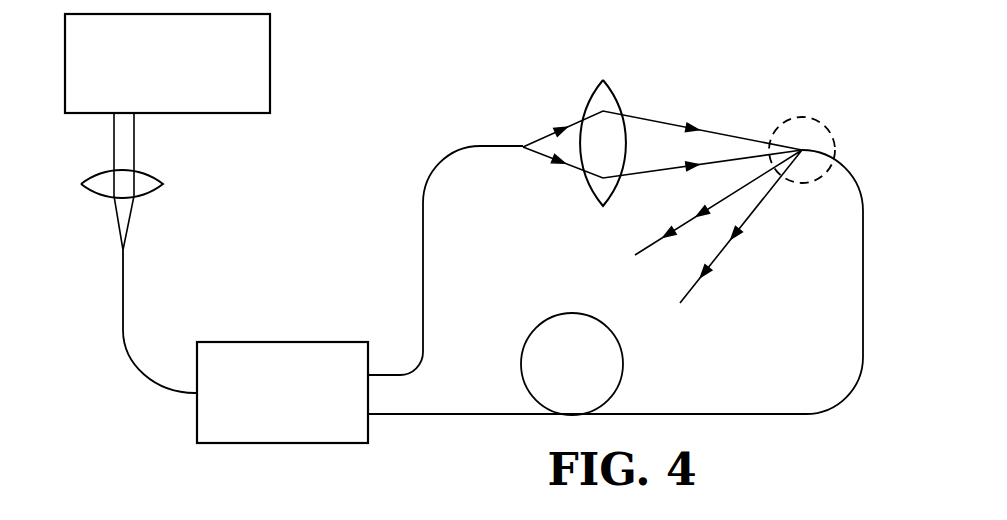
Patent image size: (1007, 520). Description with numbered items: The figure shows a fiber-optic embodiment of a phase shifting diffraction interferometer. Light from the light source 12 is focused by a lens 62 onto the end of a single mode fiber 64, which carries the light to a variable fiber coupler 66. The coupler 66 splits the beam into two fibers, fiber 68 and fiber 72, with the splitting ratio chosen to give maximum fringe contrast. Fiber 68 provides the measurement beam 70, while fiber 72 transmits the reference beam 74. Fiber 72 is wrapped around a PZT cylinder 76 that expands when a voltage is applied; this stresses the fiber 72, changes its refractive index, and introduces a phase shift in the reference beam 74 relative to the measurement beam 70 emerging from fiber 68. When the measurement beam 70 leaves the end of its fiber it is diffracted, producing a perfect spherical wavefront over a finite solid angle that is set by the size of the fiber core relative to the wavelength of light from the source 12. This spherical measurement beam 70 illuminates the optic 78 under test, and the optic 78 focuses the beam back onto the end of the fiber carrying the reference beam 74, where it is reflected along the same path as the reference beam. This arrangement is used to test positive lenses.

The light source 12 is at (270, 80).
The lens 62 is at (150, 175).
The single mode fiber 64 is at (123, 287).
The variable fiber coupler 66 is at (277, 342).
The fiber 68 is at (423, 228).
The measurement beam 70 is at (556, 133).
The fiber 72 is at (450, 412).
The reference beam 74 is at (749, 217).
The PZT cylinder 76 is at (557, 381).
The optic under test 78 is at (612, 98).